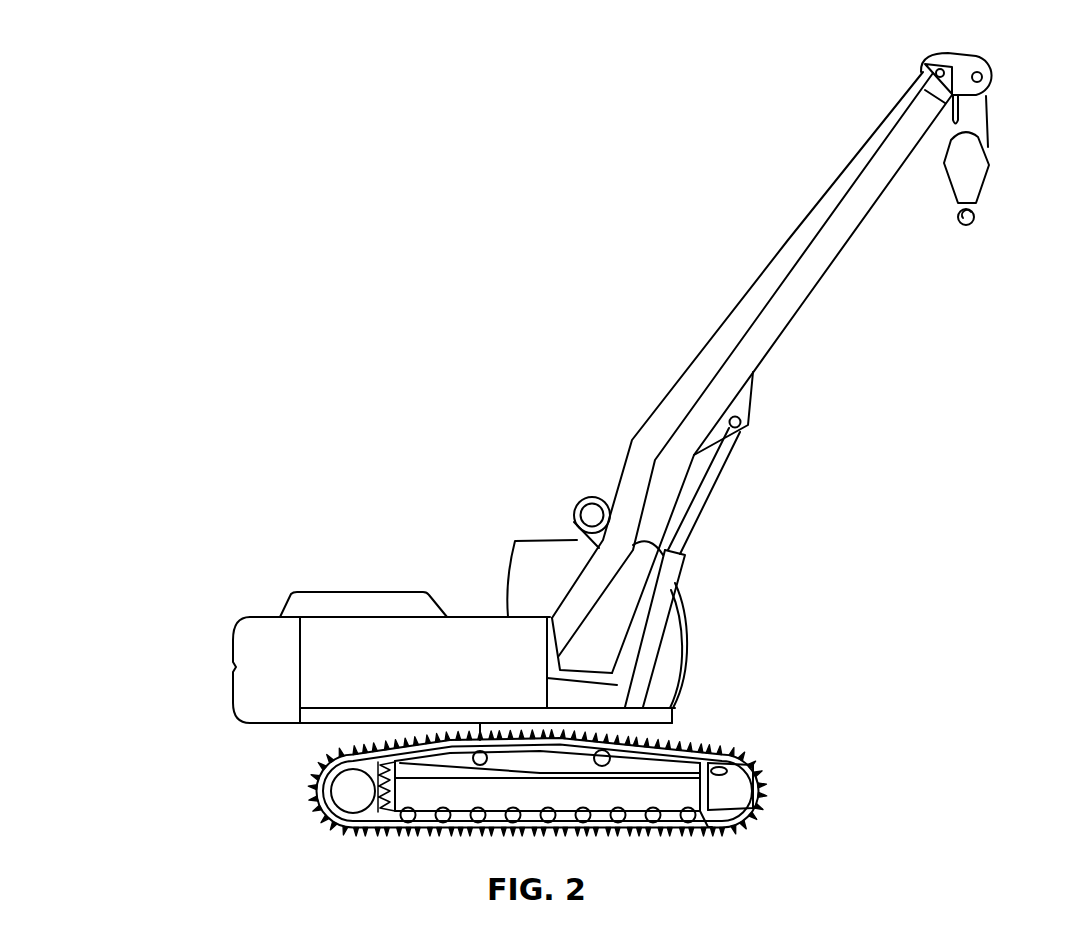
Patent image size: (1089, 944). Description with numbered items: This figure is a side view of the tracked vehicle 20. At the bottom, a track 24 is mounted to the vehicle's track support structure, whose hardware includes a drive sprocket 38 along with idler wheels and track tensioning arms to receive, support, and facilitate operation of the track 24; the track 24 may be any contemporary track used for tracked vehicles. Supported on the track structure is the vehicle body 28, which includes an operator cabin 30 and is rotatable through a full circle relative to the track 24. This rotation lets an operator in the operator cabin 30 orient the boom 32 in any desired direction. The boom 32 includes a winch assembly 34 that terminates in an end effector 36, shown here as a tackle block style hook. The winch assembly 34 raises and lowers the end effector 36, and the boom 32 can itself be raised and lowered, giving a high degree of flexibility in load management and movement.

The tracked vehicle 20 is at (178, 258).
The track 24 is at (713, 833).
The vehicle body 28 is at (365, 637).
The operator cabin 30 is at (689, 618).
The boom 32 is at (970, 57).
The winch assembly 34 is at (668, 360).
The end effector 36 is at (981, 192).
The drive sprocket 38 is at (343, 782).